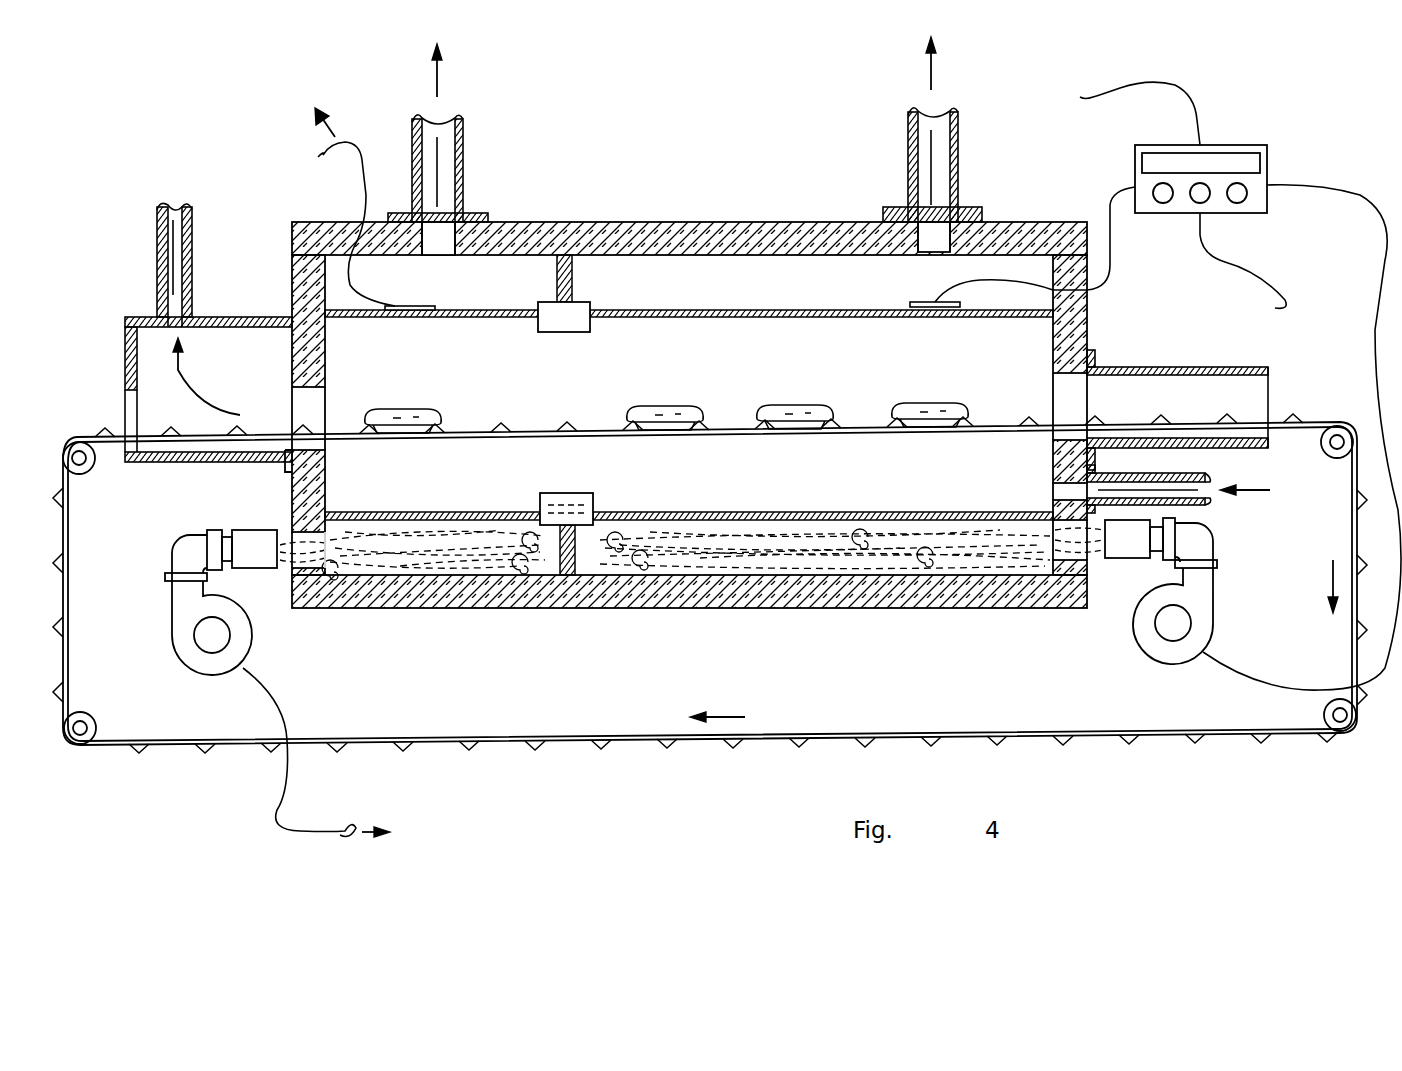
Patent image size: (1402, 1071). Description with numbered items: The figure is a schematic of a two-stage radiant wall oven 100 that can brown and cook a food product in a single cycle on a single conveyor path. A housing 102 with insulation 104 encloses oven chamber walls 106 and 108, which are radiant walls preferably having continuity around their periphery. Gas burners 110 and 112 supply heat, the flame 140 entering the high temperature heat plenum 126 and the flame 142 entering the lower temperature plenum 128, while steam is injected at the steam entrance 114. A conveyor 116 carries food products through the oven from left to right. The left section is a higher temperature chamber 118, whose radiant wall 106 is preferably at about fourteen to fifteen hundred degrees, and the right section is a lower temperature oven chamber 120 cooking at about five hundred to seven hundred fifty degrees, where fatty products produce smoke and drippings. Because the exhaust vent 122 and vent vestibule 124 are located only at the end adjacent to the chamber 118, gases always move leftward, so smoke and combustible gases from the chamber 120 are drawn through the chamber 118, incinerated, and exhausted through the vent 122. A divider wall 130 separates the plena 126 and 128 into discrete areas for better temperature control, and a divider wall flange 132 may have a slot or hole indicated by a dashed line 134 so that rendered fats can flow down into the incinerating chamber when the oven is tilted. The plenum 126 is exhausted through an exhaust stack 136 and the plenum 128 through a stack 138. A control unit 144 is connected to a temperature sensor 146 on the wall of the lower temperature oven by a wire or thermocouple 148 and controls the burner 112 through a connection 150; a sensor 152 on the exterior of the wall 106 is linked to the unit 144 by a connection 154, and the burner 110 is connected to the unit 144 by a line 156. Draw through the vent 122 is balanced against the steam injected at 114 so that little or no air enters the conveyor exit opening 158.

The oven 100 is at (724, 460).
The housing 102 is at (675, 232).
The insulation 104 is at (810, 232).
The oven chamber wall 106 is at (470, 318).
The oven chamber wall 108 is at (693, 320).
The gas burner 110 is at (172, 675).
The gas burner 112 is at (1127, 628).
The steam entrance 114 is at (1052, 487).
The conveyor 116 is at (1167, 737).
The higher temperature chamber 118 is at (457, 366).
The lower temperature oven chamber 120 is at (888, 356).
The exhaust vent 122 is at (195, 250).
The vent vestibule 124 is at (218, 355).
The heat plenum 126 is at (535, 289).
The heat plenum 128 is at (707, 289).
The divider wall 130 is at (572, 265).
The divider wall flange 132 is at (565, 332).
The slot or hole 134 is at (605, 498).
The exhaust stack 136 is at (465, 148).
The exhaust stack 138 is at (960, 160).
The flame 140 is at (380, 557).
The flame 142 is at (935, 545).
The control unit 144 is at (1267, 160).
The temperature sensor 146 is at (920, 302).
The wire or thermocouple 148 is at (1110, 205).
The connection 150 is at (1385, 207).
The sensor 152 is at (430, 306).
The connection 154 is at (360, 208).
The line 156 is at (1218, 255).
The conveyor exit opening 158 is at (1250, 397).